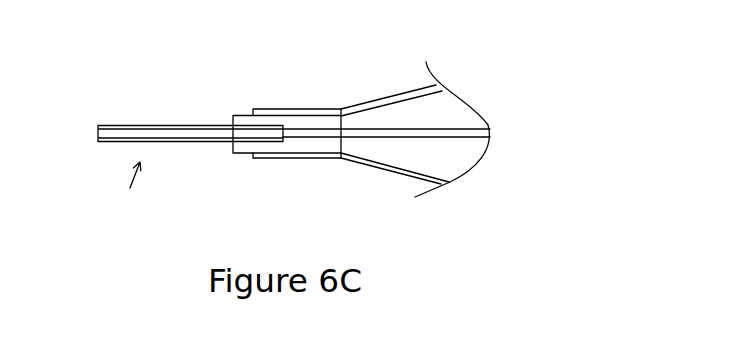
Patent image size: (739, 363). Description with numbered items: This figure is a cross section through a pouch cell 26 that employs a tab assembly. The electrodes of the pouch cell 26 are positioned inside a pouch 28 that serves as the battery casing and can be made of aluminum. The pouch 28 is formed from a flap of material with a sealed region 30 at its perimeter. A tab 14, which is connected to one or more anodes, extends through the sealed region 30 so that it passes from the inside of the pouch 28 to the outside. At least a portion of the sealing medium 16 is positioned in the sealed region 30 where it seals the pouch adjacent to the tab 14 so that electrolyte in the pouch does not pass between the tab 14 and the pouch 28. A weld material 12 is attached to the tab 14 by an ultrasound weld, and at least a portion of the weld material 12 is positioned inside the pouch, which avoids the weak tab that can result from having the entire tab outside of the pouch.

The weld material 12 is at (107, 125).
The tab 14 is at (472, 128).
The sealing medium 16 is at (237, 116).
The pouch cell 26 is at (126, 187).
The pouch 28 is at (390, 97).
The sealed region 30 is at (298, 109).